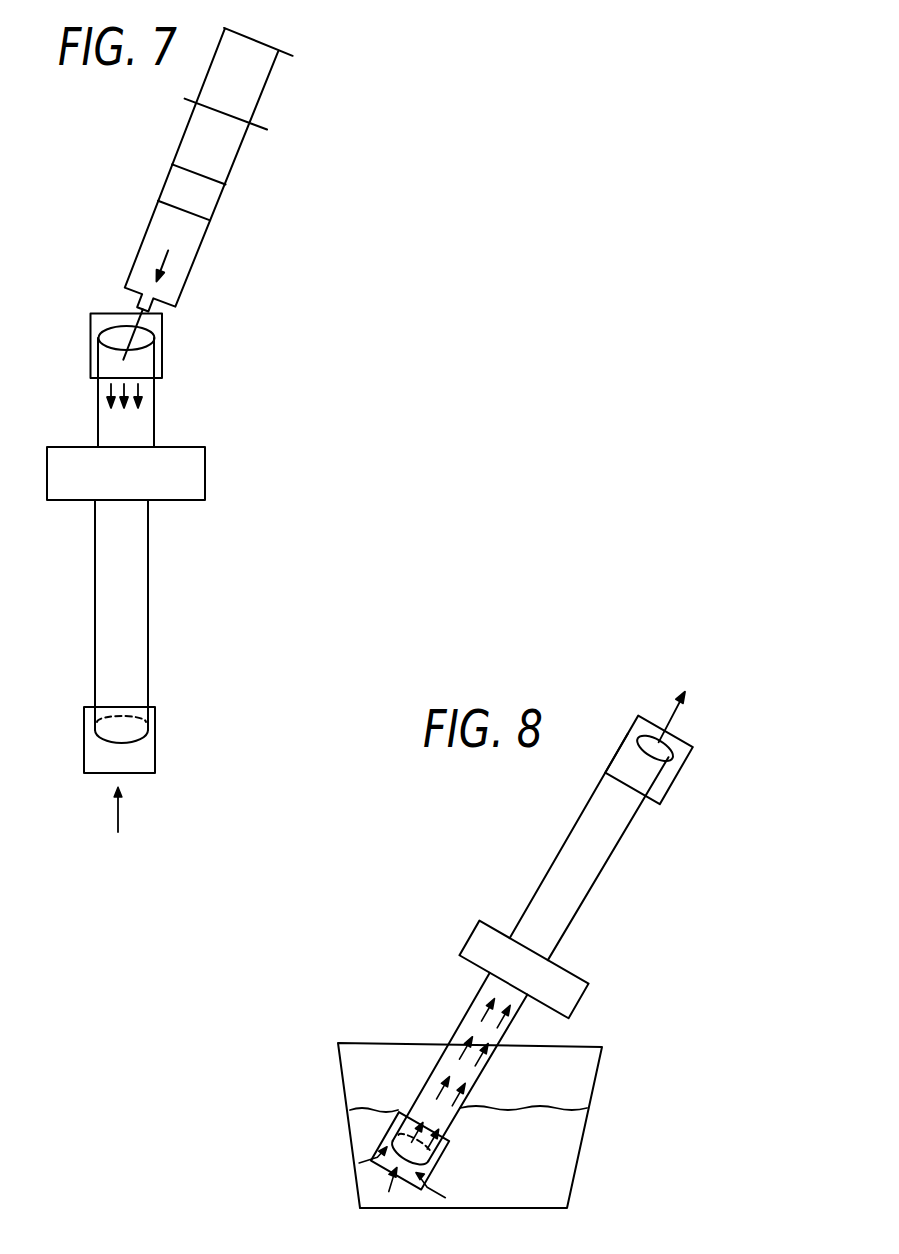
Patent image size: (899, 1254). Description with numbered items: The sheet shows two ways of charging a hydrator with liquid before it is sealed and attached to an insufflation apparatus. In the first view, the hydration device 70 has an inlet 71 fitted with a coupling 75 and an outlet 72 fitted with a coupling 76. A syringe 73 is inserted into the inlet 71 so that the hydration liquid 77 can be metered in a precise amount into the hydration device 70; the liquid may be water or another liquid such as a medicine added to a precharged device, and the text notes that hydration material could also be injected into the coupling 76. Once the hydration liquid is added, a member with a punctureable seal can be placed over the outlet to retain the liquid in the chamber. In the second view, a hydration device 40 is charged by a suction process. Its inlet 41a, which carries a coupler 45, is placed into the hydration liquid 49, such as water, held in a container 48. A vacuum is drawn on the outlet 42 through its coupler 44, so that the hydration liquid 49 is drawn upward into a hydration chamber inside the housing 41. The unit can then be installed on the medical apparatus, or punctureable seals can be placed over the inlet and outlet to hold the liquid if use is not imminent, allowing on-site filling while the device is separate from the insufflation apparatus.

In FIG. 7, the syringe 73 is at (187, 137).
In FIG. 7, the hydration liquid 77 is at (165, 232).
In FIG. 7, the coupling 75 is at (162, 334).
In FIG. 7, the inlet 71 is at (147, 392).
In FIG. 7, the hydration device 70 is at (226, 466).
In FIG. 7, the outlet 72 is at (140, 615).
In FIG. 7, the coupling 76 is at (157, 738).
In FIG. 8, the hydration device 40 is at (465, 870).
In FIG. 8, the housing 41 is at (472, 930).
In FIG. 8, the inlet 41a is at (393, 1147).
In FIG. 8, the outlet 42 is at (605, 877).
In FIG. 8, the coupler 44 is at (680, 738).
In FIG. 8, the coupler 45 is at (427, 1162).
In FIG. 8, the container 48 is at (577, 1172).
In FIG. 8, the hydration liquid 49 is at (513, 1174).